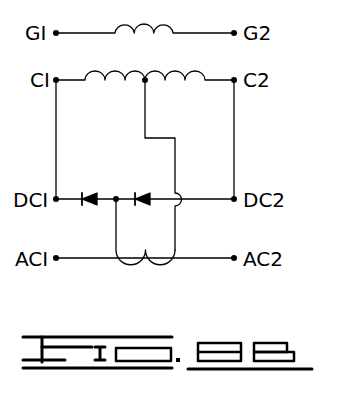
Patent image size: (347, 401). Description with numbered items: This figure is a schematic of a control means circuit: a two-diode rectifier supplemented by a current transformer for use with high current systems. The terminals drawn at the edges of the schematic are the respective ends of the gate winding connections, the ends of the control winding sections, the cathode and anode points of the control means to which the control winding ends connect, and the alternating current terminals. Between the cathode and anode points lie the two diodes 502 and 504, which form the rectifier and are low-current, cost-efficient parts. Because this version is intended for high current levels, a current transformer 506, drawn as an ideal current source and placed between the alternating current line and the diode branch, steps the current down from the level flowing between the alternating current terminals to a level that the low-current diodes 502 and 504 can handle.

The diode 502 is at (90, 203).
The diode 504 is at (146, 192).
The current transformer 506 is at (134, 266).